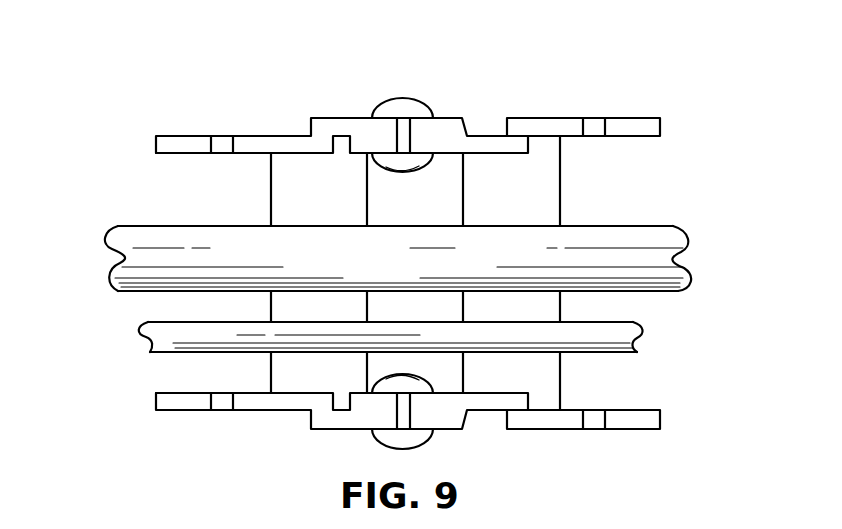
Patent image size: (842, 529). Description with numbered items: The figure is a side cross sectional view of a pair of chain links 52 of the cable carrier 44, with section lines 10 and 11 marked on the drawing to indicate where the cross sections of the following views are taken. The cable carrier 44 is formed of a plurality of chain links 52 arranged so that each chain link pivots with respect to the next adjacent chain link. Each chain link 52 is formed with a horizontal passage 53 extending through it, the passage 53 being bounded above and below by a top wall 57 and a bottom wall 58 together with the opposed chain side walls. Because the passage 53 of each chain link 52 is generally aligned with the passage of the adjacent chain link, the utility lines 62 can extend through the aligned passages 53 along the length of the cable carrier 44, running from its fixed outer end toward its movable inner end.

The section line 10- 10 is at (112, 153).
The section line 11- 11 is at (157, 62).
The cable carrier 44 is at (233, 82).
The chain links 52 is at (328, 116).
The horizontal passages 53 is at (668, 190).
The top wall 57 is at (637, 125).
The bottom wall 58 is at (649, 430).
The utility lines 62 is at (188, 224).